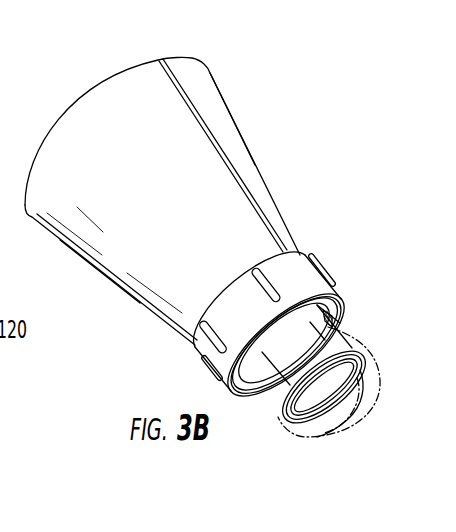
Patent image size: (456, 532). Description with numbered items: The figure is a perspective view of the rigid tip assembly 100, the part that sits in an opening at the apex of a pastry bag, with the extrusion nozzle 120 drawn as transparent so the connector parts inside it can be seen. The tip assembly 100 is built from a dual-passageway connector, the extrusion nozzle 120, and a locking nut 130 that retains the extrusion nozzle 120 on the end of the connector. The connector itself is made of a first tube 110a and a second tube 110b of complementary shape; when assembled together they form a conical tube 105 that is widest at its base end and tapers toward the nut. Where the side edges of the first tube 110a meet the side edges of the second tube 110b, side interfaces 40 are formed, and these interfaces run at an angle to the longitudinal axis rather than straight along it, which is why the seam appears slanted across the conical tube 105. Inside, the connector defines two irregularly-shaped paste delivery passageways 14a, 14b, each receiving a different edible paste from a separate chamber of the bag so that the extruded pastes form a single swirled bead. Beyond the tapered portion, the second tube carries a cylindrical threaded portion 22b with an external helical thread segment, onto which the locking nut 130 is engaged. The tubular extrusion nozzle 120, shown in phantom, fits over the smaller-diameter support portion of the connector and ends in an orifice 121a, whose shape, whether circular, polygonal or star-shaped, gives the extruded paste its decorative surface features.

The rigid tip assembly 100 is at (57, 88).
The conical tube 105 is at (230, 228).
The side interfaces 40 is at (220, 140).
The first tube 110a is at (250, 168).
The second tube 110b is at (132, 253).
The locking nut 130 is at (293, 278).
The extrusion nozzle 120 is at (350, 336).
The threaded portion 22b is at (272, 388).
The passageway 14b is at (357, 373).
The passageway 14a is at (312, 410).
The orifice 121a is at (356, 428).